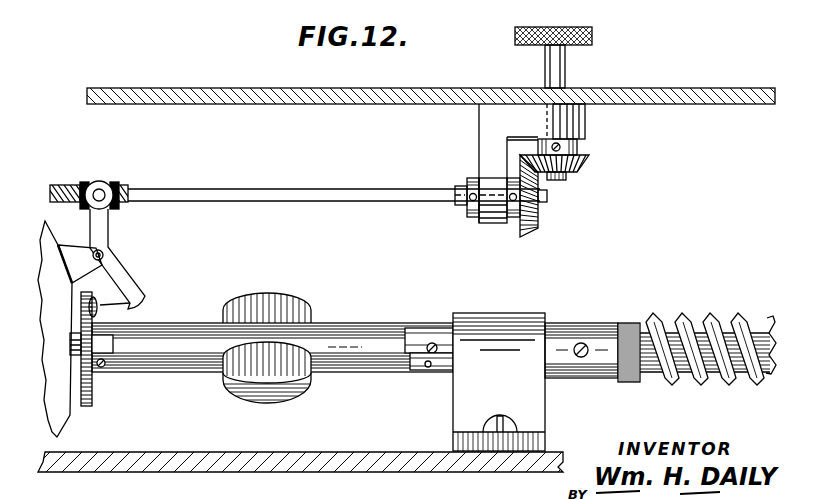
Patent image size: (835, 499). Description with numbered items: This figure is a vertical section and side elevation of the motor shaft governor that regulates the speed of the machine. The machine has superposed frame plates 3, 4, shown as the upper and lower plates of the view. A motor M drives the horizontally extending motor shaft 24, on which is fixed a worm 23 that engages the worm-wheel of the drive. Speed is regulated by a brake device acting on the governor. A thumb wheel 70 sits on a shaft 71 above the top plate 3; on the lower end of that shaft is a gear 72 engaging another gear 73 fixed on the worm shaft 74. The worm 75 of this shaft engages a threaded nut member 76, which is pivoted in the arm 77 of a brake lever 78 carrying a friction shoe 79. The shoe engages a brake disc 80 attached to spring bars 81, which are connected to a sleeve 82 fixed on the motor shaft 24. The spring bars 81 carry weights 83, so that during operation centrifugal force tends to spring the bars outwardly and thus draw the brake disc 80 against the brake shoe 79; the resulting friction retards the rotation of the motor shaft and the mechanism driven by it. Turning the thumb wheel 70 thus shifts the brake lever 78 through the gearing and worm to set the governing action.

The top frame plate 3 is at (661, 95).
The frame plate 4 is at (223, 472).
The worm 23 is at (722, 326).
The motor shaft 24 is at (368, 345).
The thumb wheel 70 is at (592, 33).
The shaft 71 is at (550, 70).
The gear 72 is at (580, 162).
The gear 73 is at (532, 226).
The worm shaft 74 is at (318, 180).
The worm 75 is at (120, 188).
The threaded nut member 76 is at (85, 185).
The arm 77 is at (103, 228).
The brake lever 78 is at (125, 285).
The friction shoe 79 is at (128, 310).
The brake disc 80 is at (93, 391).
The spring bars 81 is at (218, 365).
The sleeve 82 is at (434, 340).
The weights 83 is at (292, 352).
The motor M is at (60, 400).